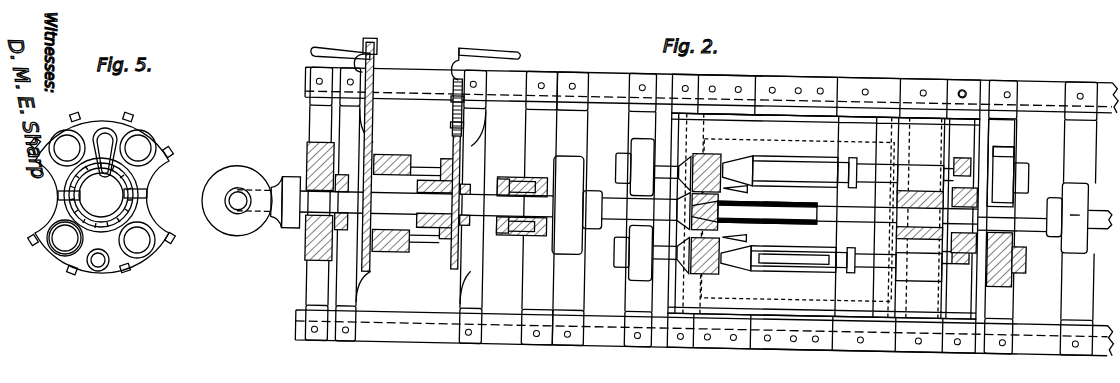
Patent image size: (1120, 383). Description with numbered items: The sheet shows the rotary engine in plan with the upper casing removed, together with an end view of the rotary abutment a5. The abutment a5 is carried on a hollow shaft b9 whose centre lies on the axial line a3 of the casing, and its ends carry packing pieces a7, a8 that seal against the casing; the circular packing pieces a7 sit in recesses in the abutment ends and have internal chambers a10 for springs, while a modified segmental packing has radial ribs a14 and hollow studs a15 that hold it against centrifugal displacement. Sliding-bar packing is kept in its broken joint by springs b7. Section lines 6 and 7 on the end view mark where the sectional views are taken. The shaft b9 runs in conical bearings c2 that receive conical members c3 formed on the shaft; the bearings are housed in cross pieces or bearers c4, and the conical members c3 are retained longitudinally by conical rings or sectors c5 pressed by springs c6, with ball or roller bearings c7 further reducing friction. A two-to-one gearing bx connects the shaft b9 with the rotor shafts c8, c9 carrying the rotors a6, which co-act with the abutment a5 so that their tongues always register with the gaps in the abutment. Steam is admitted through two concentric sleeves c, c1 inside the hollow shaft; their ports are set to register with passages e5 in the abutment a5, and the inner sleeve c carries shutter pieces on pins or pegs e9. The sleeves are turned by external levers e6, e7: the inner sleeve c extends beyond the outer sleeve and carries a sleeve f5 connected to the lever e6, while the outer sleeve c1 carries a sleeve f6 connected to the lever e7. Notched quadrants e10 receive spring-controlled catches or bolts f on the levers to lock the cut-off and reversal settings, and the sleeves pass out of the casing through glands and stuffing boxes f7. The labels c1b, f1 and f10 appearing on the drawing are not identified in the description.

In FIG. 5, the section line 6— 6 is at (104, 192).
In FIG. 5, the section line 7— 7 is at (120, 173).
In FIG. 5, the axial line a3 is at (64, 173).
In FIG. 2, the rotary abutment a5 is at (790, 236).
In FIG. 2, the rotor a6 is at (794, 153).
In FIG. 5, the packing piece a7 is at (65, 248).
In FIG. 5, the packing piece a8 is at (107, 160).
In FIG. 5, the internal chamber a10 is at (150, 220).
In FIG. 2, the radial ribs a14 is at (822, 248).
In FIG. 2, the hollow studs a15 is at (822, 248).
In FIG. 2, the spring b7 is at (1088, 193).
In FIG. 2, the abutment shaft b9 is at (1036, 210).
In FIG. 2, the gearing bx is at (919, 152).
In FIG. 2, the inner sleeve c is at (770, 199).
In FIG. 2, the outer sleeve c1 is at (469, 203).
In FIG. 2, the spindle collar c1b is at (796, 200).
In FIG. 2, the conical bearing c2 is at (989, 227).
In FIG. 2, the conical member c3 is at (963, 197).
In FIG. 2, the cross piece c4 is at (966, 84).
In FIG. 2, the conical ring c5 is at (979, 174).
In FIG. 2, the spring c6 is at (962, 189).
In FIG. 2, the ball or roller bearing c7 is at (566, 180).
In FIG. 2, the rotor shaft c8 is at (727, 165).
In FIG. 2, the rotor shaft c9 is at (728, 272).
In FIG. 5, the passage e5 is at (59, 195).
In FIG. 2, the operating lever e6 is at (340, 57).
In FIG. 2, the operating lever e7 is at (490, 55).
In FIG. 2, the pin e9 is at (612, 199).
In FIG. 2, the notched quadrant e10 is at (372, 157).
In FIG. 2, the spring controlled stop f is at (460, 141).
In FIG. 2, the clutch member f1 is at (374, 140).
In FIG. 2, the sleeve f5 is at (328, 165).
In FIG. 2, the sleeve f6 is at (497, 184).
In FIG. 2, the gland and stuffing box f7 is at (312, 176).
In FIG. 2, the shifting plate f10 is at (452, 152).